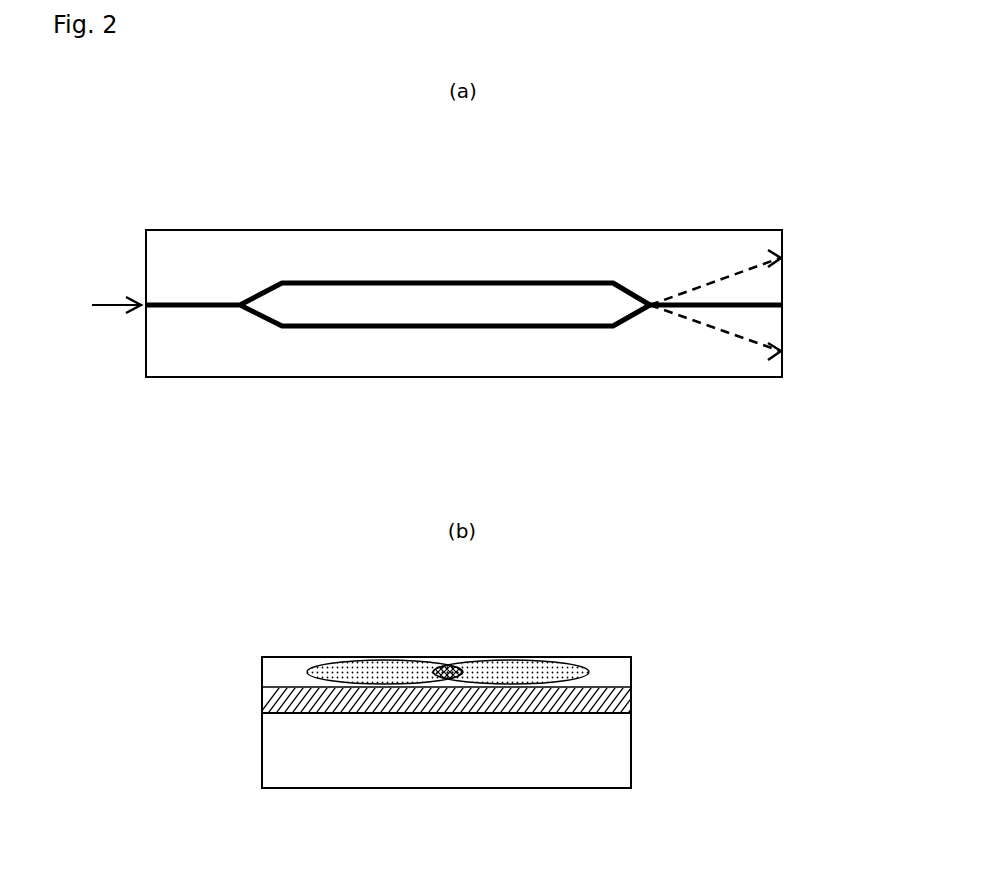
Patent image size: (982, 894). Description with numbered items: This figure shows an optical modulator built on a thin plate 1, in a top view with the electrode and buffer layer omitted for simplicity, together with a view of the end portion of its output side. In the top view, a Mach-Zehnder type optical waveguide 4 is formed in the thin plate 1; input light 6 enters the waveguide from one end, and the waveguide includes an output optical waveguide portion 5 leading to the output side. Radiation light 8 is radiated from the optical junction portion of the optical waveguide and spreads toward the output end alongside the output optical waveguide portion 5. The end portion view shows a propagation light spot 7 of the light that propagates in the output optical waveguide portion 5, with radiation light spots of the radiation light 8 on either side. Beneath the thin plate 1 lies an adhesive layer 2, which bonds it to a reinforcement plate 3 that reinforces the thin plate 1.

The thin plate 1 is at (455, 250).
The adhesive layer 2 is at (578, 702).
The reinforcement plate 3 is at (578, 758).
The Mach-Zehnder type optical waveguide 4 is at (498, 330).
The output optical waveguide portion 5 is at (731, 300).
The input light 6 is at (103, 305).
The propagation light spot 7 is at (455, 664).
The radiation light 8 is at (748, 268).